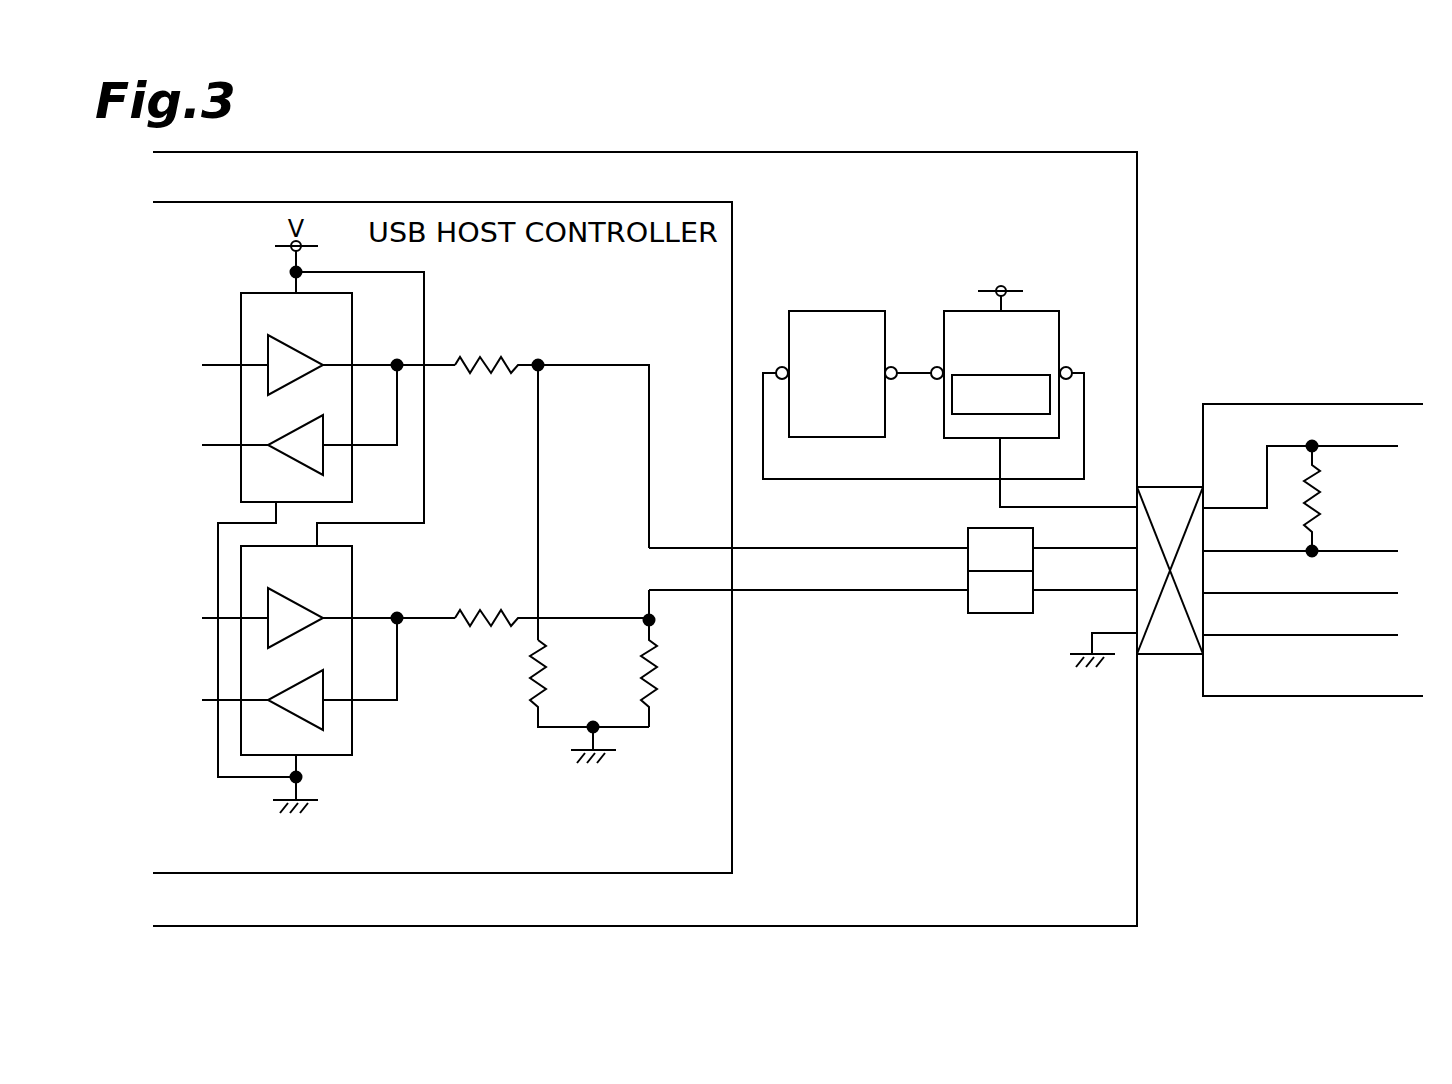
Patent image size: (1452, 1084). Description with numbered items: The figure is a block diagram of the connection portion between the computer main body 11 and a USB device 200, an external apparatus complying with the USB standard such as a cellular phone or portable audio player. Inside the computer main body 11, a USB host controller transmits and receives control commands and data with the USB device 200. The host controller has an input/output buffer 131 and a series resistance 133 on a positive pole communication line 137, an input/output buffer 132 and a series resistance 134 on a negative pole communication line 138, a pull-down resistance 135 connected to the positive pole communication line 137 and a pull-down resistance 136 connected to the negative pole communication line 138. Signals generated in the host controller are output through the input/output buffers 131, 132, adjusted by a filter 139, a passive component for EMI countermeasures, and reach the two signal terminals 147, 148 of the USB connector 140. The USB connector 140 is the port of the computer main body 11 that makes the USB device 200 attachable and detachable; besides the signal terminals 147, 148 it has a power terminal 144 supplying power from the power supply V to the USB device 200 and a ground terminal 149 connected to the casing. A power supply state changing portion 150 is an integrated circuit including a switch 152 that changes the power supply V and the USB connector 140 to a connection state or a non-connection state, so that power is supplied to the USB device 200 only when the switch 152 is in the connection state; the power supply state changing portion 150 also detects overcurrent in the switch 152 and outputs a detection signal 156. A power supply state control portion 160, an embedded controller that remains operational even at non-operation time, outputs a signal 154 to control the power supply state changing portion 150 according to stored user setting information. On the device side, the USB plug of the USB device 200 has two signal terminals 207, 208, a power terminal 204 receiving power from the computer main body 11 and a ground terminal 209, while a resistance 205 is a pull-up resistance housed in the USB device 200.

The computer main body 11 is at (1145, 200).
The input/output buffer 131 is at (241, 310).
The input/output buffer 132 is at (352, 737).
The series resistance 133 is at (484, 358).
The series resistance 134 is at (484, 611).
The pull-down resistance 135 is at (548, 683).
The pull-down resistance 136 is at (657, 683).
The positive pole communication line 137 is at (905, 548).
The negative pole communication line 138 is at (905, 592).
The filter 139 is at (1007, 613).
The USB connector 140 is at (1160, 655).
The power terminal 144 is at (1128, 500).
The signal terminal 147 is at (1130, 546).
The signal terminal 148 is at (1130, 590).
The ground terminal 149 is at (1128, 636).
The power supply state changing portion 150 is at (1045, 311).
The switch 152 is at (966, 414).
The signal 154 is at (913, 378).
The detection signal 156 is at (795, 479).
The power supply state control portion 160 is at (870, 311).
The USB device 200 is at (1400, 397).
The power terminal 204 is at (1208, 506).
The resistance 205 is at (1322, 490).
The signal terminal 207 is at (1208, 549).
The signal terminal 208 is at (1208, 592).
The ground terminal 209 is at (1208, 634).